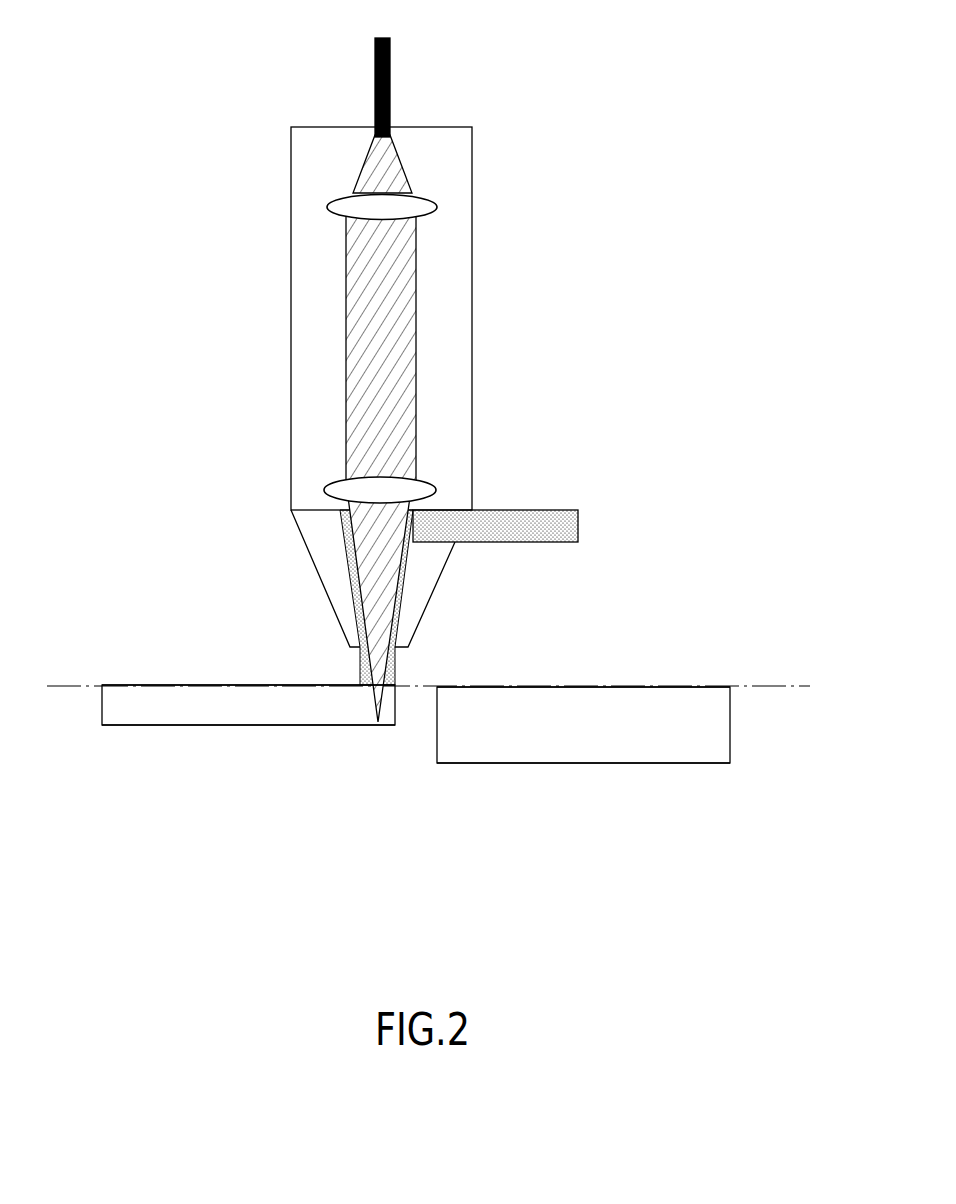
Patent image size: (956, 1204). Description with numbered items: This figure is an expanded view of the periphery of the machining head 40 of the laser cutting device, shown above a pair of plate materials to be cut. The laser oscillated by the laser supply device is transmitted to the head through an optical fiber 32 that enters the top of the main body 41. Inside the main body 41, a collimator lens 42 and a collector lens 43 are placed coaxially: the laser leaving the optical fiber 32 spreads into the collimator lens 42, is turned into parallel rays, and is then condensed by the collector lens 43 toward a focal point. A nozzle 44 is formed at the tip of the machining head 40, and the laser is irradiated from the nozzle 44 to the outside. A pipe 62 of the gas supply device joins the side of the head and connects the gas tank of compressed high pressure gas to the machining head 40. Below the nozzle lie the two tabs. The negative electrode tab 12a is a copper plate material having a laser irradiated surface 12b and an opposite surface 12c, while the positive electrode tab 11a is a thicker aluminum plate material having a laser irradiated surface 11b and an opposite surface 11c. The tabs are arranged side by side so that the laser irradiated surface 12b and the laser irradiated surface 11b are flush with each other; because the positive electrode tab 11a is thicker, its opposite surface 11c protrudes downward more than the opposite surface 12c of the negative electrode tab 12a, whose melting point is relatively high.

The machining head 40 is at (389, 371).
The optical fiber 32 is at (375, 80).
The main body 41 is at (472, 181).
The collimator lens 42 is at (326, 208).
The collector lens 43 is at (324, 491).
The nozzle 44 is at (344, 633).
The pipe 62 is at (525, 510).
The negative electrode tab 12a is at (178, 730).
The laser irradiated surface 12b is at (118, 684).
The opposite surface 12c is at (312, 727).
The positive electrode tab 11a is at (523, 767).
The laser irradiated surface 11b is at (682, 686).
The opposite surface 11c is at (655, 765).